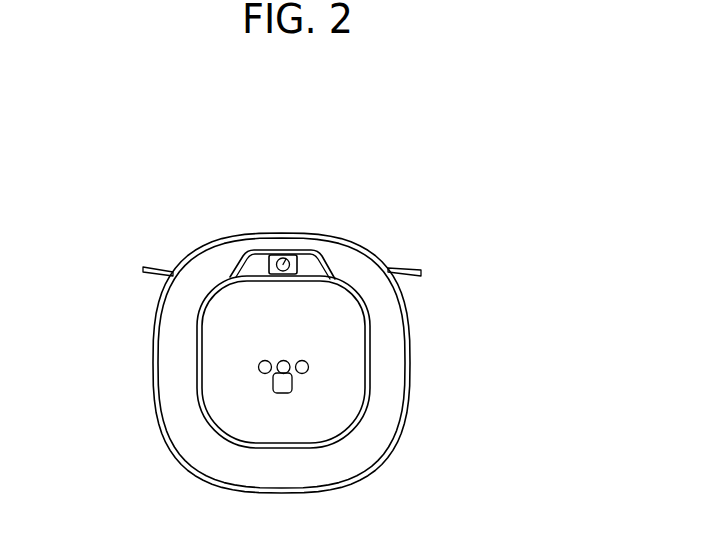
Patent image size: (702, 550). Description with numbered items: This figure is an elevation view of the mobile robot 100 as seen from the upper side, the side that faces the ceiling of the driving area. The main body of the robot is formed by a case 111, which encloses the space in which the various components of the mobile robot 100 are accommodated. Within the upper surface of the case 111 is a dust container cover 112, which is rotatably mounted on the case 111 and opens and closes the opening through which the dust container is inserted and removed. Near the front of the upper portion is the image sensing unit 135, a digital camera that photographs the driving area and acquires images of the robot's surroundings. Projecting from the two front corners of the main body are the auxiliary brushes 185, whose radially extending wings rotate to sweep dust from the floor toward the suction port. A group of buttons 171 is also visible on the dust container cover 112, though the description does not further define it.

The mobile robot 100 is at (198, 174).
The case 111 is at (390, 350).
The dust container cover 112 is at (293, 303).
The image sensing unit 135 is at (276, 256).
The input unit buttons 171 is at (293, 387).
The auxiliary brush 185 is at (143, 267).